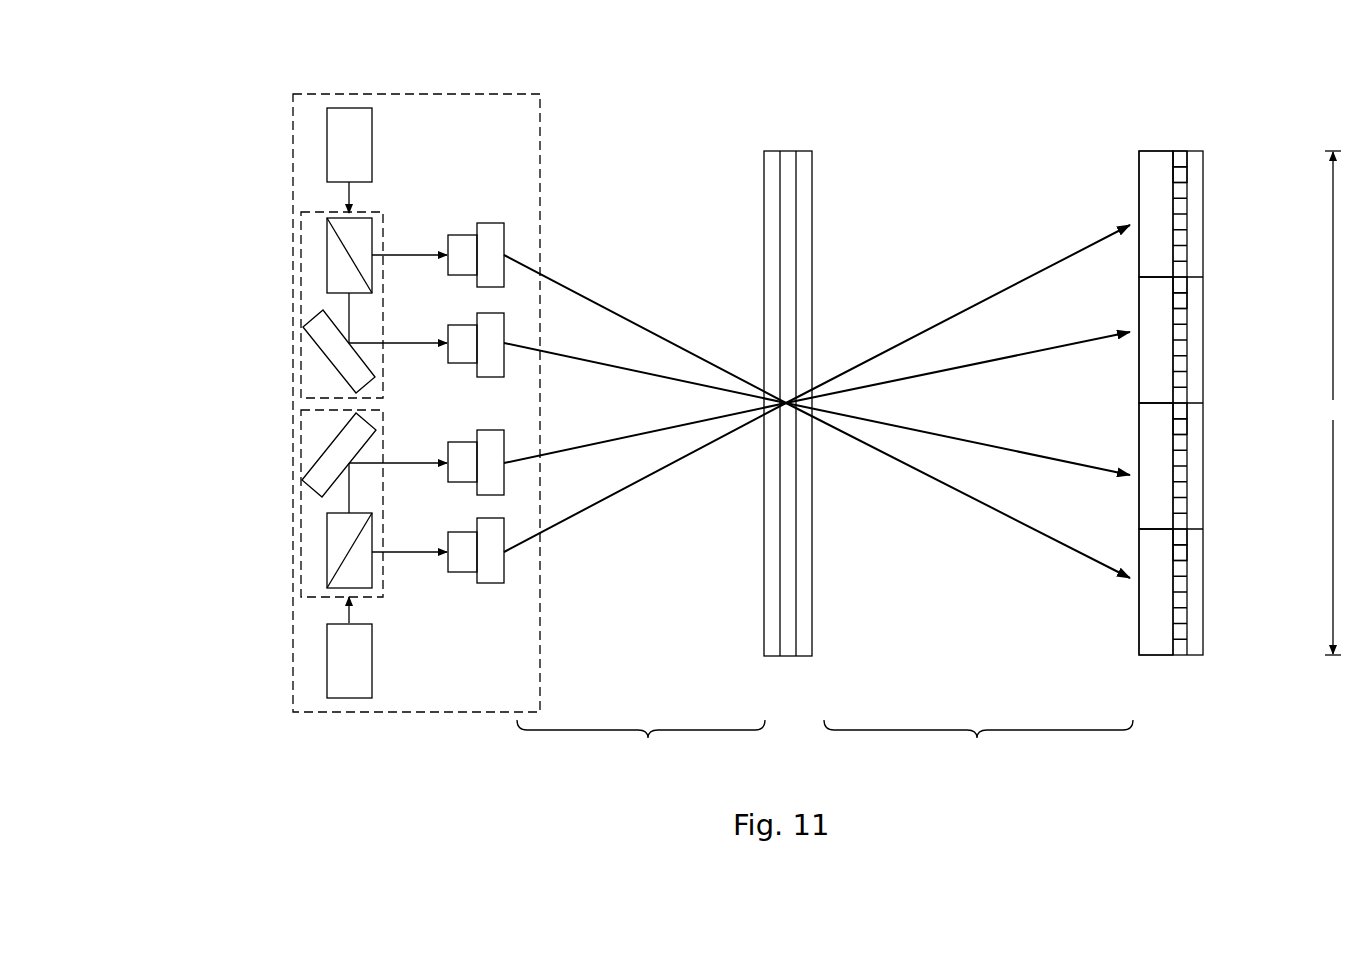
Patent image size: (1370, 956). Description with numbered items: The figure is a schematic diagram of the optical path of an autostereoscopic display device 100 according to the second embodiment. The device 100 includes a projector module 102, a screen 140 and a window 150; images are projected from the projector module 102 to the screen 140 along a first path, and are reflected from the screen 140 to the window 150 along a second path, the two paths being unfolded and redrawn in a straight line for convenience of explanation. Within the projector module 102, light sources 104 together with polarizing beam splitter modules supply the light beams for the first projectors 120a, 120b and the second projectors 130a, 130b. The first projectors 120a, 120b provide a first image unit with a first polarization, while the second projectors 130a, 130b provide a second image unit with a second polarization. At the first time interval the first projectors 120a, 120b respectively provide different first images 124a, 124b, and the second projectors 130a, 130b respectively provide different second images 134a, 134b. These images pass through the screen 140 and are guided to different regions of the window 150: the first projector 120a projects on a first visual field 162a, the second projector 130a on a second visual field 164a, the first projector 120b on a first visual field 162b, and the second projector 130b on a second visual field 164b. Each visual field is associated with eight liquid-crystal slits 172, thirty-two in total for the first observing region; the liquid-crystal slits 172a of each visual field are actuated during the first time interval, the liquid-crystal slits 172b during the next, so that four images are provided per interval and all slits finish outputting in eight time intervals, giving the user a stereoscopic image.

The autostereoscopic display device 100 is at (192, 64).
The projector module 102 is at (293, 120).
The light source 104 is at (326, 148).
The first projector 120a is at (490, 583).
The first projector 120b is at (490, 313).
The second projector 130a is at (490, 495).
The second projector 130b is at (490, 223).
The first image 124a is at (623, 490).
The first image 124b is at (568, 357).
The second image 134a is at (568, 452).
The second image 134b is at (595, 302).
The screen 140 is at (797, 690).
The window 150 is at (1170, 690).
The first visual field 162a is at (1158, 237).
The first visual field 162b is at (1158, 475).
The second visual field 164a is at (1158, 348).
The second visual field 164b is at (1158, 600).
The liquid-crystal slits 172 is at (1180, 151).
The liquid-crystal slit 172a is at (1182, 159).
The liquid-crystal slit 172b is at (1182, 178).